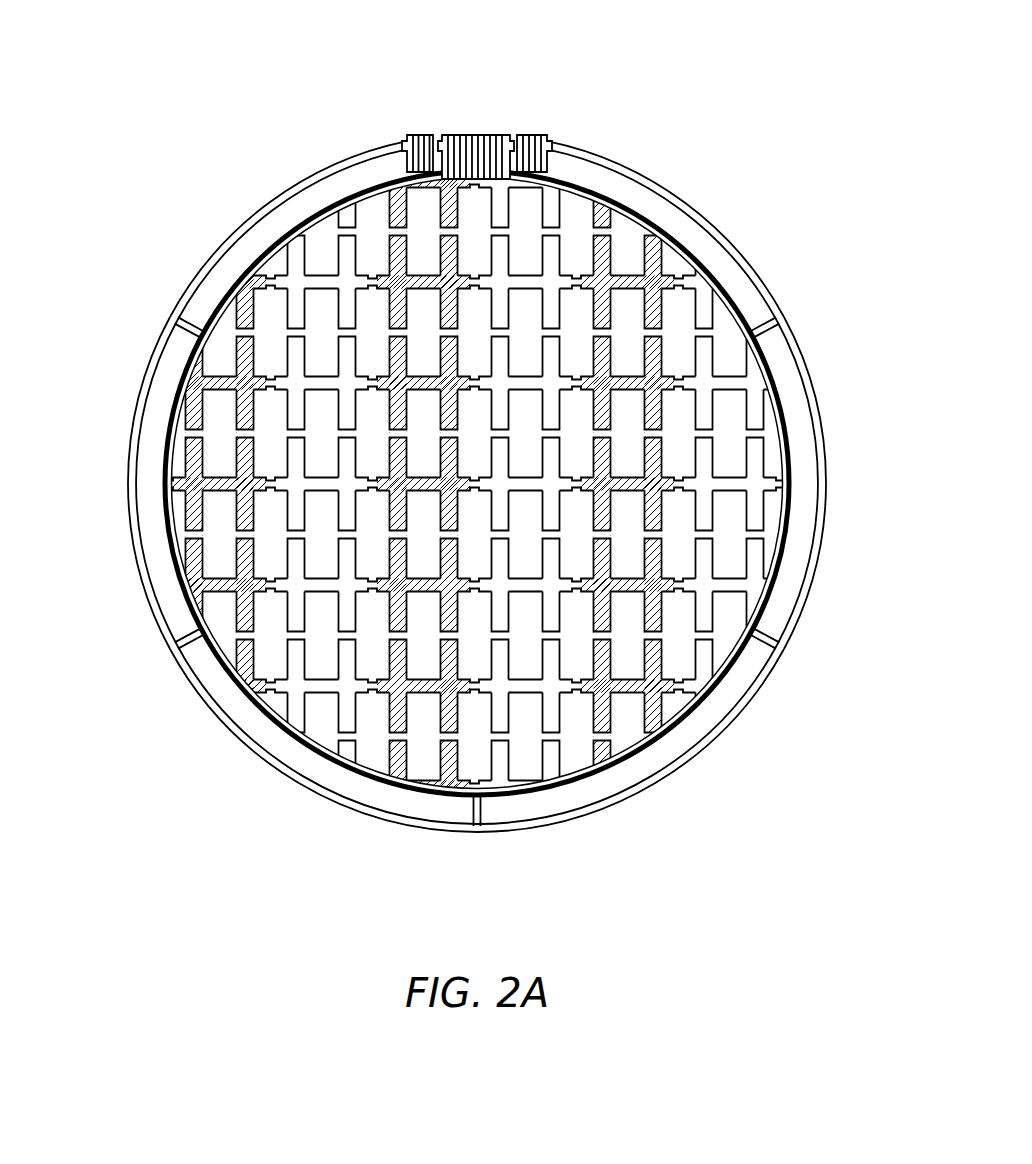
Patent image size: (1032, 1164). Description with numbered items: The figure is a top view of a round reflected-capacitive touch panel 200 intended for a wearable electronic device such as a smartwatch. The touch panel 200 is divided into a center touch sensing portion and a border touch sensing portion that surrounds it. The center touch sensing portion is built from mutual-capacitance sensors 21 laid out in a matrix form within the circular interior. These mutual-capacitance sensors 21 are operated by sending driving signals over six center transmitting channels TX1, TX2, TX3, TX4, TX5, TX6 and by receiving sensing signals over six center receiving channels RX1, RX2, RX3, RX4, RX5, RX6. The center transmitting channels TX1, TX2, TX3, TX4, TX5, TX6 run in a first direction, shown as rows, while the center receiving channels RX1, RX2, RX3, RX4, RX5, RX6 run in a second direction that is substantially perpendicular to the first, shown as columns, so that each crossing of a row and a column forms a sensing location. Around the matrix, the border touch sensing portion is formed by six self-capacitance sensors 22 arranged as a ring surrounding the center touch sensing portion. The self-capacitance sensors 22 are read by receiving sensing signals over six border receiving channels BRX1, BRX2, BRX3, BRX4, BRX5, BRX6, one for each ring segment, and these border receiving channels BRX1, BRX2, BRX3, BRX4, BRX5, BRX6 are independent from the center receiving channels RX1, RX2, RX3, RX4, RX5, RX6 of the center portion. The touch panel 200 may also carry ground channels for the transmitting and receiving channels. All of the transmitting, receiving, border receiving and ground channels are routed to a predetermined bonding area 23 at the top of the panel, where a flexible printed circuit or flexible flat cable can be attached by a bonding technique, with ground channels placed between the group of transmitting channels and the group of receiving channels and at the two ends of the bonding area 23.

The reflected-capacitive touch panel 200 is at (104, 37).
The mutual-capacitance sensors 21 is at (373, 218).
The self-capacitance sensors 22 is at (590, 176).
The predetermined bonding area 23 is at (477, 122).
The center transmitting channel TX1 is at (327, 232).
The center transmitting channel TX2 is at (225, 333).
The center transmitting channel TX3 is at (176, 434).
The center transmitting channel TX4 is at (176, 535).
The center transmitting channel TX5 is at (225, 636).
The center transmitting channel TX6 is at (325, 737).
The center receiving channel RX1 is at (219, 592).
The center receiving channel RX2 is at (322, 695).
The center receiving channel RX3 is at (424, 695).
The center receiving channel RX4 is at (526, 695).
The center receiving channel RX5 is at (628, 695).
The center receiving channel RX6 is at (730, 592).
The border receiving channel BRX1 is at (307, 200).
The border receiving channel BRX2 is at (150, 484).
The border receiving channel BRX3 is at (285, 758).
The border receiving channel BRX4 is at (748, 676).
The border receiving channel BRX5 is at (802, 486).
The border receiving channel BRX6 is at (697, 236).